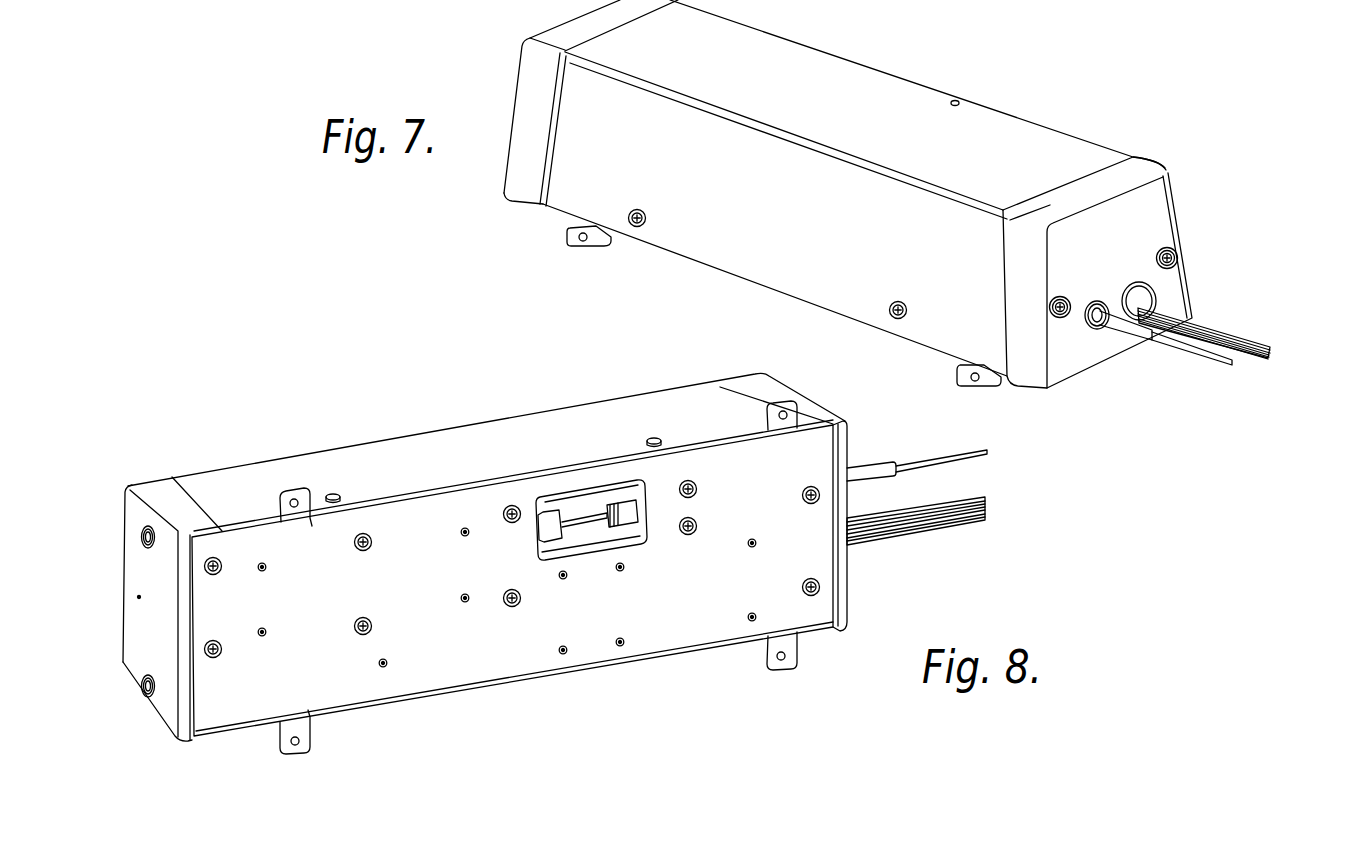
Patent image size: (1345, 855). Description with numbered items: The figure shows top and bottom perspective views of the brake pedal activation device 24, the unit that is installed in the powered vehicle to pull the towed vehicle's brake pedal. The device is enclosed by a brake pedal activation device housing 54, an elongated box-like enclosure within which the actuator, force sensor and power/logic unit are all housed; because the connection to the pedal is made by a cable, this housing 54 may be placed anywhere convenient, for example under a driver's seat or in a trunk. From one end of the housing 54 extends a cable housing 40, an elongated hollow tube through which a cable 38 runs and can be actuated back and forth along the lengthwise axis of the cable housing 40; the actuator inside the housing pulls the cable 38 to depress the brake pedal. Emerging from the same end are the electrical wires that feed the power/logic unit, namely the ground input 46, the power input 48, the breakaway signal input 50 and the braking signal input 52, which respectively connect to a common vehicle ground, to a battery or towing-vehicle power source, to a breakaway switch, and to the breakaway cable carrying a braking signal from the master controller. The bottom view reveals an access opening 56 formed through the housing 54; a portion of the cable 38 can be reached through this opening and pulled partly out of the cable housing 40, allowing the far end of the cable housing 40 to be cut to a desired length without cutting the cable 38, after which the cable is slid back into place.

In FIG. 7, the brake pedal activation device 24 is at (917, 58).
In FIG. 8, the brake pedal activation device 24 is at (253, 433).
In FIG. 7, the brake pedal activation device housing 54 is at (1026, 151).
In FIG. 8, the brake pedal activation device housing 54 is at (415, 455).
In FIG. 8, the access opening 56 is at (580, 507).
In FIG. 7, the cable housing 40 is at (1128, 325).
In FIG. 8, the cable housing 40 is at (875, 469).
In FIG. 7, the cable 38 is at (1215, 355).
In FIG. 8, the cable 38 is at (975, 455).
In FIG. 7, the ground input 46 is at (1240, 334).
In FIG. 8, the ground input 46 is at (948, 530).
In FIG. 7, the power input 48 is at (1204, 332).
In FIG. 8, the power input 48 is at (916, 513).
In FIG. 7, the breakaway signal input 50 is at (1203, 336).
In FIG. 8, the breakaway signal input 50 is at (916, 520).
In FIG. 7, the braking signal input 52 is at (1203, 340).
In FIG. 8, the braking signal input 52 is at (916, 527).